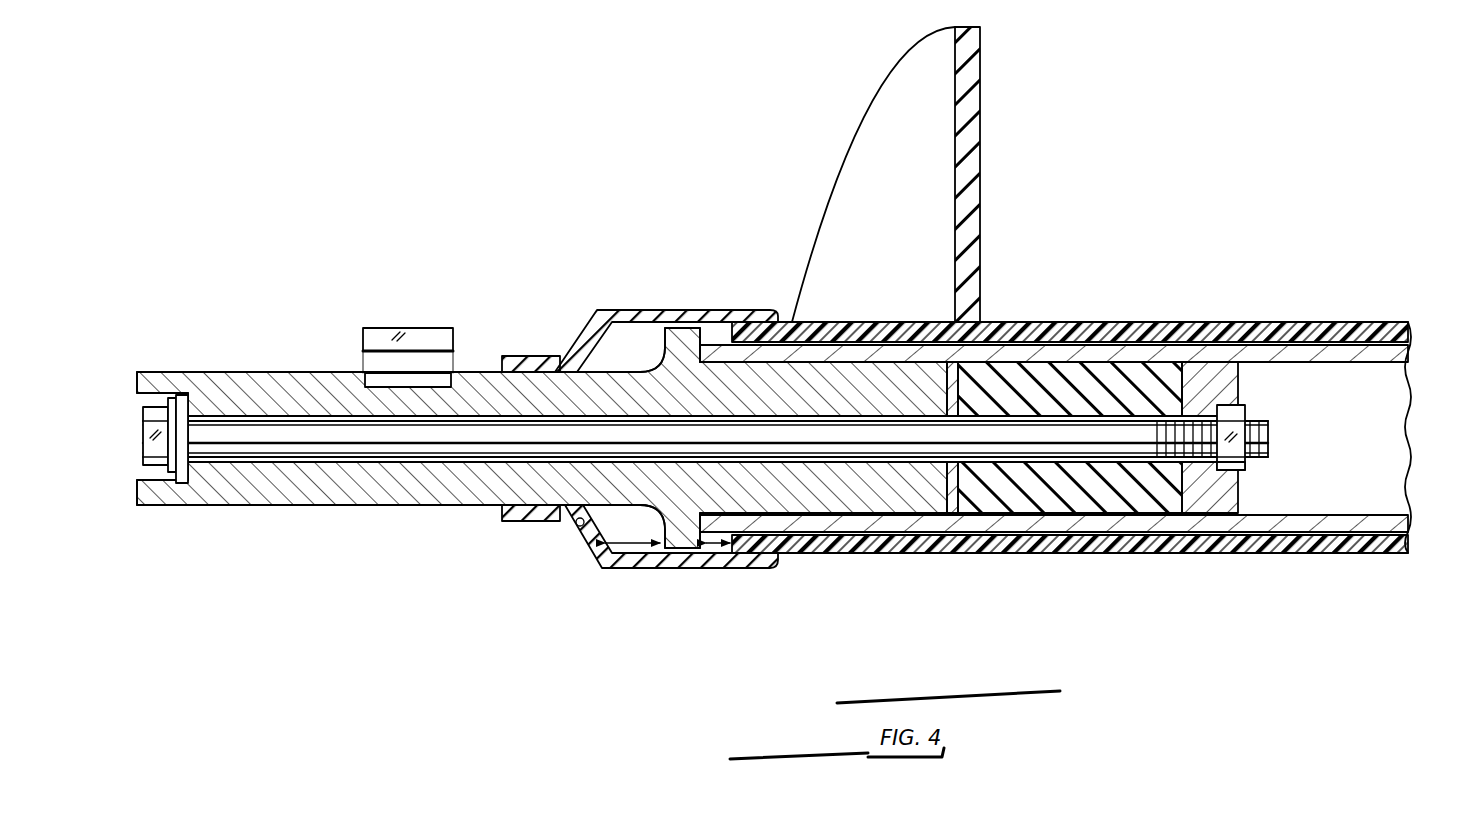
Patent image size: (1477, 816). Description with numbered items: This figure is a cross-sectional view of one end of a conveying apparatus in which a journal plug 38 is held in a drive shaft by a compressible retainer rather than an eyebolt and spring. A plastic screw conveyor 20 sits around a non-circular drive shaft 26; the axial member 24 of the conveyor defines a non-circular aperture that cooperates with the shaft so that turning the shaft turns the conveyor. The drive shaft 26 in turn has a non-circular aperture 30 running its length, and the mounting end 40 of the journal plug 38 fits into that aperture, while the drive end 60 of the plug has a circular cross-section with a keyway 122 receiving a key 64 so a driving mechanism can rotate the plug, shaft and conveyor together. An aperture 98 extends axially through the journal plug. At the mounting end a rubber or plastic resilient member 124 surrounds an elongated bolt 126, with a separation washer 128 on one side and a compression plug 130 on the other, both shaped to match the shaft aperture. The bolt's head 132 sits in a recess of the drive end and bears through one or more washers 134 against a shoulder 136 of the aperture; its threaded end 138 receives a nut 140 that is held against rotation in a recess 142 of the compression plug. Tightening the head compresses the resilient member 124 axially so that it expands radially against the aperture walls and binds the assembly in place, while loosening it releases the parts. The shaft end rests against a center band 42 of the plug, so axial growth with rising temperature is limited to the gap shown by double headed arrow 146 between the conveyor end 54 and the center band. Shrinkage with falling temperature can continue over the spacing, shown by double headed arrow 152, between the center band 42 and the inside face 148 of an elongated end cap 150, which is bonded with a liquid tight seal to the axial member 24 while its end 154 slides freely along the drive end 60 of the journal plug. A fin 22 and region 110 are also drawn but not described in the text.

The plastic screw conveyor 20 is at (1079, 300).
The fin 22 is at (913, 57).
The axial member 24 is at (1162, 330).
The drive shaft 26 is at (1244, 352).
The aperture of drive shaft 30 is at (1388, 393).
The journal plug 38 is at (432, 538).
The mounting end 40 is at (877, 505).
The center band 42 is at (682, 330).
The end of plastic screw conveyor 54 is at (724, 312).
The drive end 60 is at (318, 508).
The key 64 is at (428, 327).
The aperture 98 is at (287, 458).
The end plate 110 is at (140, 393).
The keyway 122 is at (448, 375).
The resilient member 124 is at (1110, 505).
The elongated bolt 126 is at (1092, 447).
The separation washer 128 is at (950, 515).
The compression plug 130 is at (1215, 515).
The head 132 is at (140, 440).
The washers 134 is at (170, 482).
The shoulder 136 is at (188, 400).
The threaded end 138 is at (1268, 440).
The nut 140 is at (1245, 410).
The recess 142 is at (1243, 472).
The double headed arrow 146 is at (718, 570).
The inside face 148 is at (568, 532).
The elongated end cap 150 is at (655, 570).
The double headed arrow 152 is at (612, 562).
The end of end cap 154 is at (515, 522).